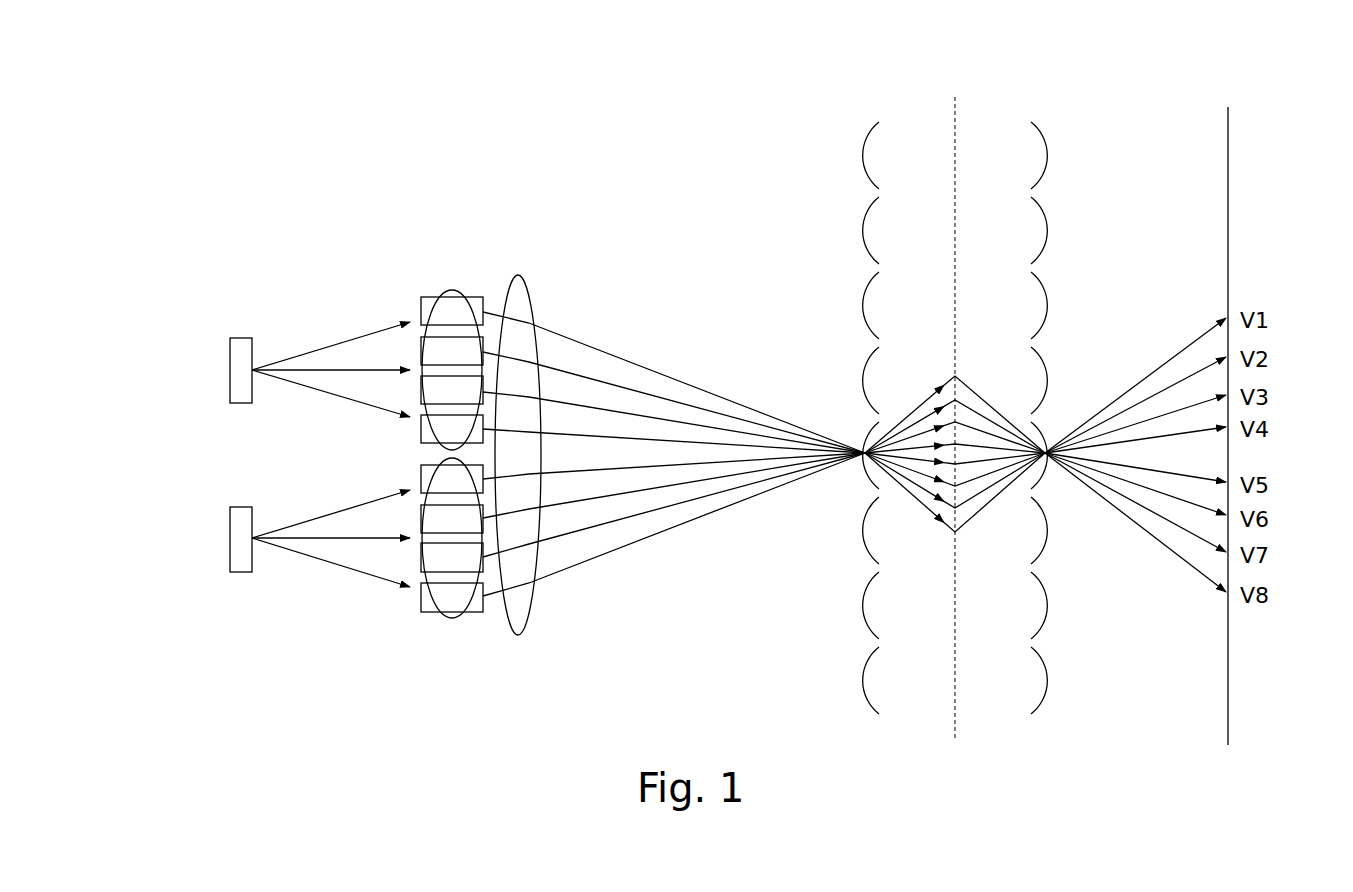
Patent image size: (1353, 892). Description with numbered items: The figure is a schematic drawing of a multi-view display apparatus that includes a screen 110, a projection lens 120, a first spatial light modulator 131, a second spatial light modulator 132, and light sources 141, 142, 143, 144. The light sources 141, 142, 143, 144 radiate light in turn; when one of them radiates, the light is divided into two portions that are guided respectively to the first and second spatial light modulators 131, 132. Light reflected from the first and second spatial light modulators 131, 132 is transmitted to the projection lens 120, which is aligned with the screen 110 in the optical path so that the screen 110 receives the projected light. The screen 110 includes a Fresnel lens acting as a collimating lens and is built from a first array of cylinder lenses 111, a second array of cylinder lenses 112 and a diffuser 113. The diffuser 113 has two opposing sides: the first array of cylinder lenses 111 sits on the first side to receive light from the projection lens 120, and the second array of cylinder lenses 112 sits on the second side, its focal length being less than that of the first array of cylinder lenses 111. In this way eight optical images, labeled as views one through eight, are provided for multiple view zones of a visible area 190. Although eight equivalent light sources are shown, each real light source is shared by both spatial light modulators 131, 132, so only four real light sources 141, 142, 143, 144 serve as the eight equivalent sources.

The screen 110 is at (1062, 72).
The first array of cylinder lenses 111 is at (862, 678).
The second array of cylinder lenses 112 is at (1048, 678).
The diffuser 113 is at (955, 706).
The projection lens 120 is at (530, 605).
The first spatial light modulator 131 is at (230, 372).
The second spatial light modulator 132 is at (230, 540).
The light source 141 is at (427, 312).
The light source 142 is at (427, 352).
The light source 143 is at (427, 387).
The light source 144 is at (427, 430).
The visible area 190 is at (1230, 452).